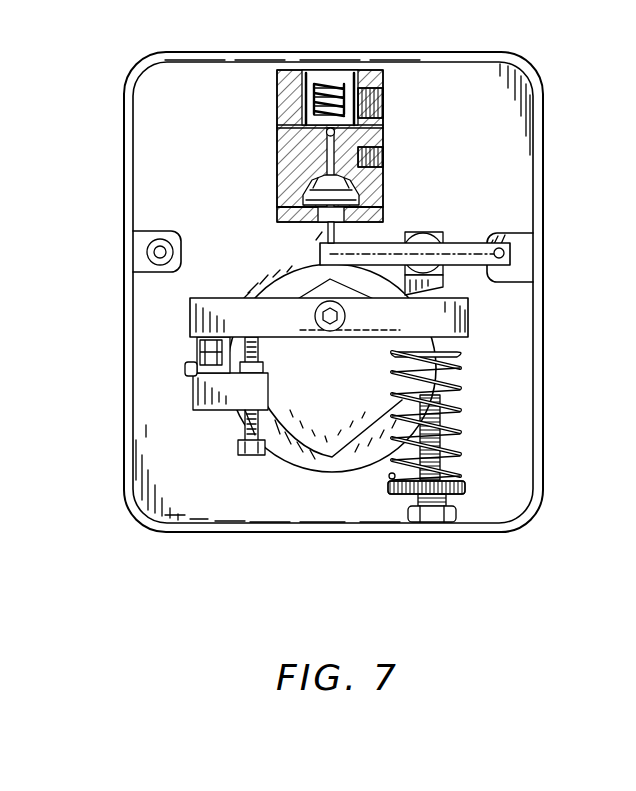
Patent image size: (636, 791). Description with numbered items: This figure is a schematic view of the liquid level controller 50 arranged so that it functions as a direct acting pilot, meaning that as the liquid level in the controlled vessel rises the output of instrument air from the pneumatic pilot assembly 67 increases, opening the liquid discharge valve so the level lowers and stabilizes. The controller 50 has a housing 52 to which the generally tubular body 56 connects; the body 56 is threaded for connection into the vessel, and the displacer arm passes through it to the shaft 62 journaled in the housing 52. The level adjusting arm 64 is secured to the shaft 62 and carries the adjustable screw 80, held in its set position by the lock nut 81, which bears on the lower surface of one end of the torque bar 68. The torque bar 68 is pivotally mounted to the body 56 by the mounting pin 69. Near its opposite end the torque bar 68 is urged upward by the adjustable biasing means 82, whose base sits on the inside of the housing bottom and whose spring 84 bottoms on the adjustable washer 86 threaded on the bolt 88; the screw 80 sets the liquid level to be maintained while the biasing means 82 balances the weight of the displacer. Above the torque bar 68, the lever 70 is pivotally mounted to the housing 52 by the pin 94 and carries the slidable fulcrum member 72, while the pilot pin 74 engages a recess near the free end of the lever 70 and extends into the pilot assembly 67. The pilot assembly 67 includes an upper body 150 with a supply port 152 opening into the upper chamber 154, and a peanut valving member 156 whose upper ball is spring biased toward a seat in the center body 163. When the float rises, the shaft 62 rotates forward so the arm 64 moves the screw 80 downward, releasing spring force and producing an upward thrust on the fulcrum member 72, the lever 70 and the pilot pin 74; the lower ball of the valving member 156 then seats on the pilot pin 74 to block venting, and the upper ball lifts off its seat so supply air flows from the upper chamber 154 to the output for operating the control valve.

The liquid level controller 50 is at (116, 194).
The housing 52 is at (451, 52).
The body 56 is at (357, 460).
The shaft 62 is at (188, 368).
The level adjusting arm 64 is at (193, 390).
The pneumatic pilot assembly 67 is at (276, 119).
The torque bar 68 is at (190, 316).
The mounting pin 69 is at (338, 330).
The lever 70 is at (462, 242).
The fulcrum member 72 is at (446, 277).
The pilot pin 74 is at (318, 238).
The adjustable screw 80 is at (243, 412).
The lock nut 81 is at (262, 368).
The adjustable biasing means 82 is at (452, 437).
The spring 84 is at (455, 433).
The adjustable washer 86 is at (466, 487).
The bolt 88 is at (447, 500).
The pin 94 is at (506, 252).
The upper body 150 is at (278, 100).
The supply port 152 is at (383, 102).
The upper chamber 154 is at (342, 70).
The peanut valving member 156 is at (326, 144).
The center body 163 is at (276, 179).